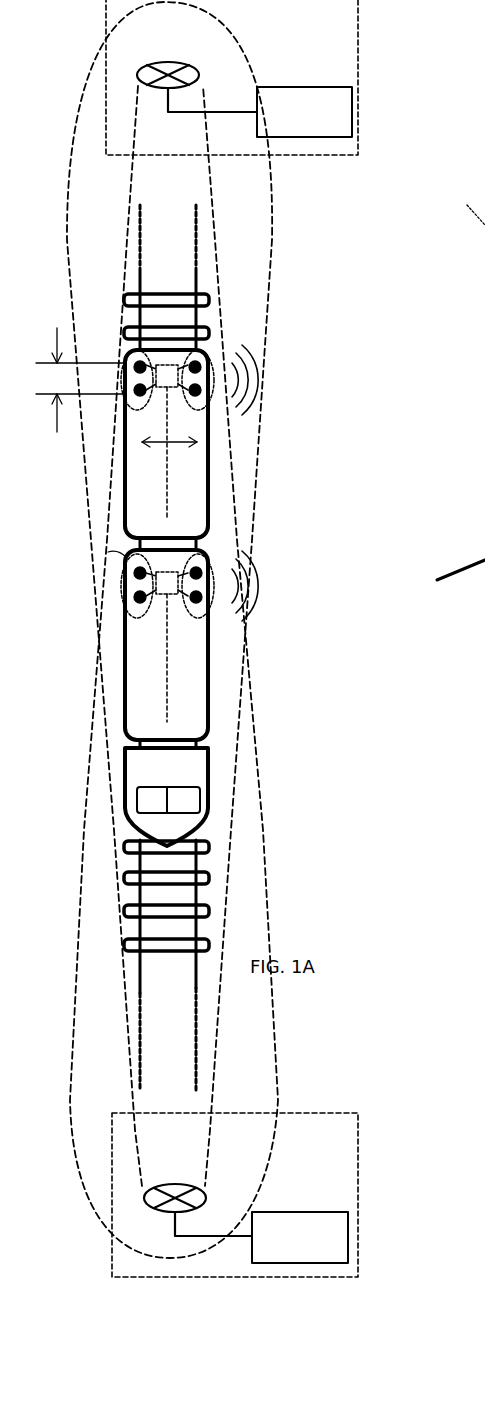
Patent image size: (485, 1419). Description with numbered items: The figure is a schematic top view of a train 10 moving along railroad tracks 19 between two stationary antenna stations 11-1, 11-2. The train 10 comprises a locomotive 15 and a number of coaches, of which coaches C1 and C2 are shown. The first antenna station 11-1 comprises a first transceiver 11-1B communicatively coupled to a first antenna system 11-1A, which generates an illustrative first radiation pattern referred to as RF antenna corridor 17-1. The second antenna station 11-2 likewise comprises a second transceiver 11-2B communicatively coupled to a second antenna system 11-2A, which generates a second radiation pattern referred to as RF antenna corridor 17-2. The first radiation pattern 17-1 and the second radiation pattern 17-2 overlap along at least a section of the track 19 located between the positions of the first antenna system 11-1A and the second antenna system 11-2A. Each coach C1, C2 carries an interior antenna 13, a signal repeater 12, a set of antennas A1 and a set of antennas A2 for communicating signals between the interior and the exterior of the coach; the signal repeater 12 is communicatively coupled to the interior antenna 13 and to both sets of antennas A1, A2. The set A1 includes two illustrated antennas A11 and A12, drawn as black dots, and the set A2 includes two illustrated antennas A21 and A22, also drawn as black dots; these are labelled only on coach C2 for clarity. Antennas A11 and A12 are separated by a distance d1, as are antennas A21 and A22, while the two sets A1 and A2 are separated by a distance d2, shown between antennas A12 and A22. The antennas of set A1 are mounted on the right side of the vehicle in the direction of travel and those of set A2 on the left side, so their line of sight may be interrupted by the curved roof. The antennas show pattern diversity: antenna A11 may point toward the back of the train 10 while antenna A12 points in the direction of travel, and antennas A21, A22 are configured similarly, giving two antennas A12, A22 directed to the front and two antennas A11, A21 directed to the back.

The train 10 is at (262, 699).
The signal repeater 12 is at (166, 364).
The interior antenna 13 is at (168, 478).
The locomotive 15 is at (212, 794).
The RF antenna corridor 17-1 is at (227, 886).
The RF antenna corridor 17-2 is at (130, 204).
The railroad tracks 19 is at (145, 1012).
The first antenna station 11-1 is at (358, 1147).
The first antenna system 11-1A is at (205, 1197).
The first transceiver 11-1B is at (300, 1237).
The second antenna station 11-2 is at (358, 31).
The second antenna system 11-2A is at (222, 44).
The second transceiver 11-2B is at (304, 112).
The set of antennas A1 is at (122, 376).
The antenna A11 is at (131, 354).
The antenna A12 is at (126, 393).
The set of antennas A2 is at (213, 352).
The antenna A21 is at (206, 362).
The antenna A22 is at (205, 400).
The coach C1 is at (126, 697).
The coach C2 is at (210, 470).
The distance d1 is at (73, 380).
The distance d2 is at (168, 448).